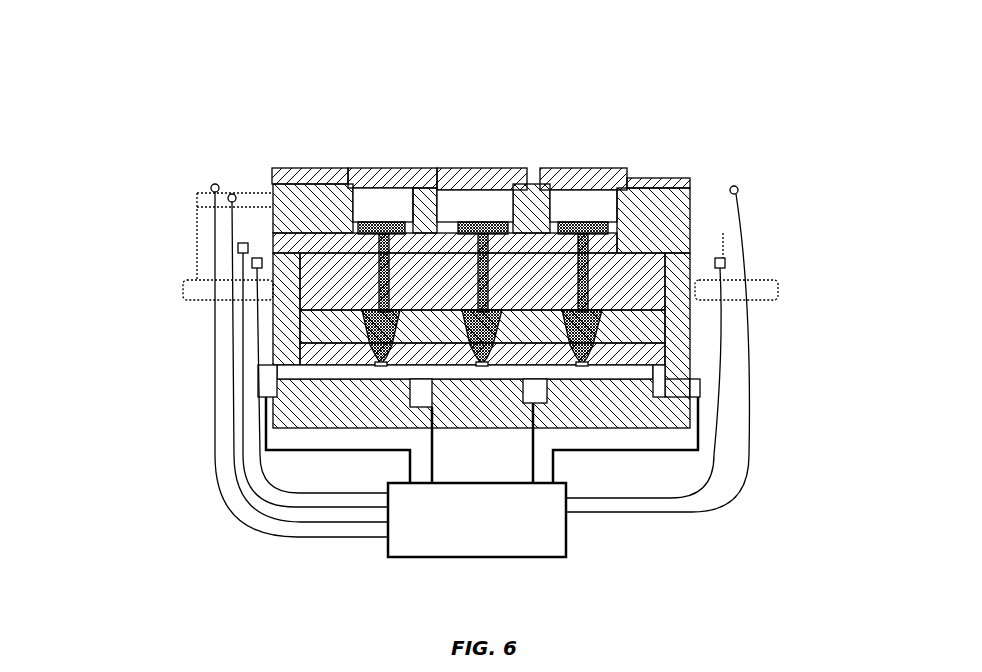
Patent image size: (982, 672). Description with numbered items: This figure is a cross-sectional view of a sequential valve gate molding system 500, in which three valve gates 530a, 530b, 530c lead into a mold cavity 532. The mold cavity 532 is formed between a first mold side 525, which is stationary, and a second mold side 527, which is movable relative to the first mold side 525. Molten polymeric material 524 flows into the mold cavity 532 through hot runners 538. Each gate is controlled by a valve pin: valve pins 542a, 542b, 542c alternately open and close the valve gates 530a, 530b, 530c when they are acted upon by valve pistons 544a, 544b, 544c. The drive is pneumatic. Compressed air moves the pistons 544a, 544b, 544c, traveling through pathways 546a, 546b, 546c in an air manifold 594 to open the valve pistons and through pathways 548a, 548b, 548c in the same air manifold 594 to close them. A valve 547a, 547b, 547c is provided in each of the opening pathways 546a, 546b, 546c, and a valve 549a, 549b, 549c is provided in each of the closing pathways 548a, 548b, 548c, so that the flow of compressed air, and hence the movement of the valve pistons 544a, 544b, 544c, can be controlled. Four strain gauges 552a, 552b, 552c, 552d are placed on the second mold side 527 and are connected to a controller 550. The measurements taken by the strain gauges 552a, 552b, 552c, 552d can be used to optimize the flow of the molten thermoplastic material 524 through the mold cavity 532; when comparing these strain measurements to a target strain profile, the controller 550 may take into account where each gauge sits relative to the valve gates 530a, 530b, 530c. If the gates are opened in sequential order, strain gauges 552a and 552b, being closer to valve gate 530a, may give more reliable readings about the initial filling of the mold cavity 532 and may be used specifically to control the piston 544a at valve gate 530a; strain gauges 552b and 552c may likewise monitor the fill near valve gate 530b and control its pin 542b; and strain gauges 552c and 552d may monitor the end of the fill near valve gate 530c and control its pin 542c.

The dispensing system 500 is at (187, 105).
The molten polymeric material 524 is at (395, 302).
The first mold side 525 is at (632, 369).
The second mold side 527 is at (678, 405).
The valve gate 530a is at (380, 366).
The valve gate 530b is at (481, 366).
The valve gate 530c is at (593, 367).
The mold cavity 532 is at (660, 364).
The hot runners 538 is at (415, 288).
The valve pin 542a is at (372, 318).
The valve pin 542b is at (437, 226).
The valve pin 542c is at (608, 236).
The valve piston 544a is at (357, 220).
The valve piston 544b is at (506, 222).
The valve piston 544c is at (613, 222).
The pathway 546a is at (280, 182).
The pathway 546b is at (416, 228).
The pathway 546c is at (662, 204).
The valve 547a is at (238, 248).
The valve 547b is at (252, 266).
The valve 547c is at (725, 263).
The pathway 548a is at (289, 182).
The pathway 548b is at (313, 182).
The pathway 548c is at (647, 190).
The valve 549a is at (211, 186).
The valve 549b is at (230, 194).
The valve 549c is at (738, 188).
The controller 550 is at (433, 540).
The strain gauge 552a is at (278, 371).
The strain gauge 552b is at (430, 390).
The strain gauge 552c is at (535, 395).
The strain gauge 552d is at (700, 385).
The air manifold 594 is at (273, 218).